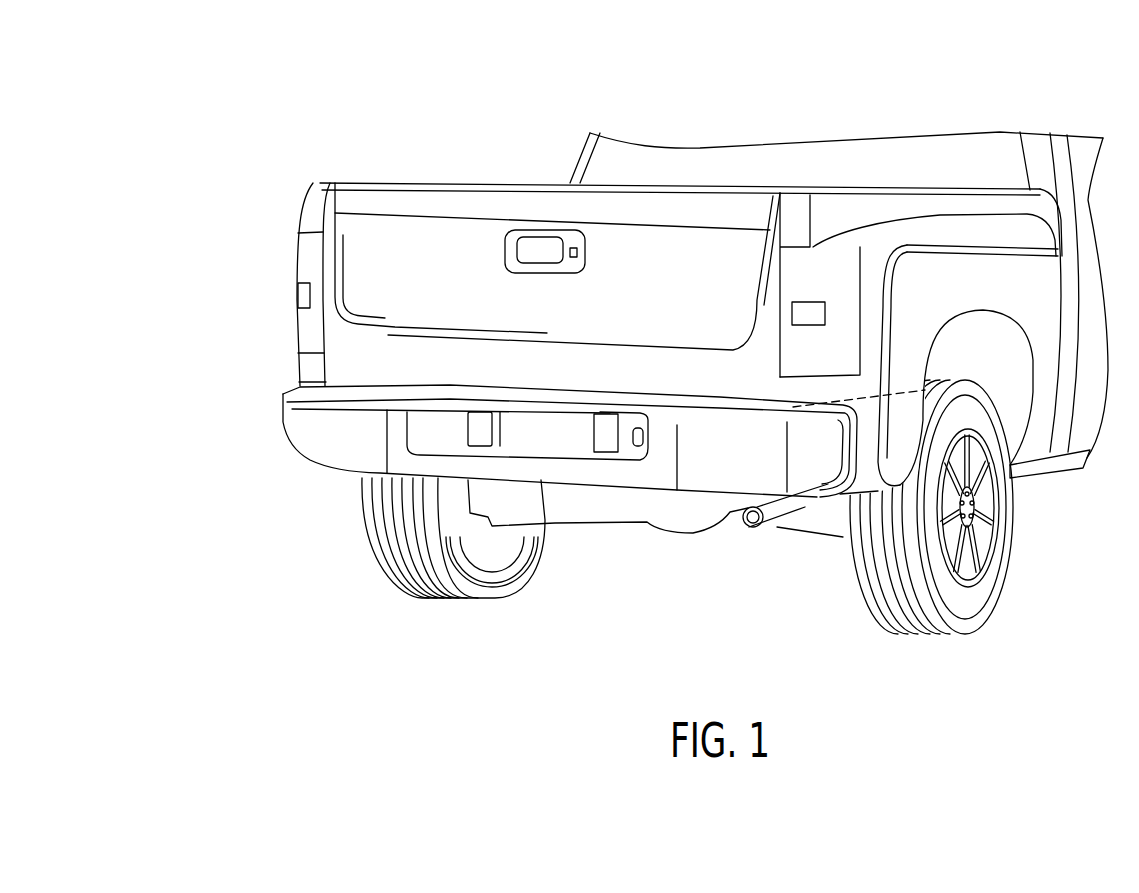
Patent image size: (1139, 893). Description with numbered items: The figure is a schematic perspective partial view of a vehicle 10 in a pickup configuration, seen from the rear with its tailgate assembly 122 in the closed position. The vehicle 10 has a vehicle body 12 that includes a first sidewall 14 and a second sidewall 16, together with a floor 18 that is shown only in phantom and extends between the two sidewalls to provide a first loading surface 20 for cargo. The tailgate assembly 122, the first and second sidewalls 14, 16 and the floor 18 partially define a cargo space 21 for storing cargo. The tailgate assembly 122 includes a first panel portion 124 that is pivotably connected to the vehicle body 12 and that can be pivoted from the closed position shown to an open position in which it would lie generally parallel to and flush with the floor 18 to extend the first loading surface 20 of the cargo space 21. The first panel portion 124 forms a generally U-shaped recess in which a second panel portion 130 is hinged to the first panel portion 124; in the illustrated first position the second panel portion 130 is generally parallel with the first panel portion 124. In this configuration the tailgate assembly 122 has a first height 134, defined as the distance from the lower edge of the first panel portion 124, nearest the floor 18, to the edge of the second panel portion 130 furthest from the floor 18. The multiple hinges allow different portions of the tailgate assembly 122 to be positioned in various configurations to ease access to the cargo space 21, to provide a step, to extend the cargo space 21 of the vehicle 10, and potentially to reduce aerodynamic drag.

The vehicle 10 is at (250, 213).
The vehicle body 12 is at (953, 203).
The first sidewall 14 is at (316, 193).
The second sidewall 16 is at (797, 207).
The floor 18 is at (930, 408).
The first loading surface 20 is at (863, 385).
The cargo space 21 is at (510, 116).
The tailgate assembly 122 is at (393, 303).
The first panel portion 124 is at (397, 363).
The second panel portion 130 is at (377, 245).
The first height 134 is at (680, 202).